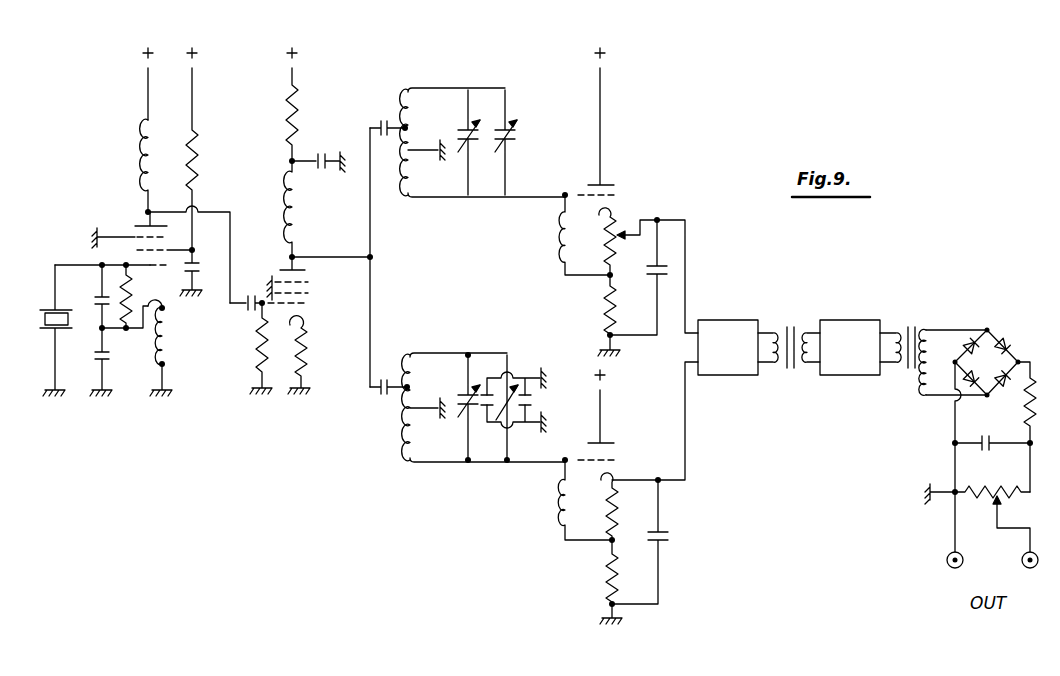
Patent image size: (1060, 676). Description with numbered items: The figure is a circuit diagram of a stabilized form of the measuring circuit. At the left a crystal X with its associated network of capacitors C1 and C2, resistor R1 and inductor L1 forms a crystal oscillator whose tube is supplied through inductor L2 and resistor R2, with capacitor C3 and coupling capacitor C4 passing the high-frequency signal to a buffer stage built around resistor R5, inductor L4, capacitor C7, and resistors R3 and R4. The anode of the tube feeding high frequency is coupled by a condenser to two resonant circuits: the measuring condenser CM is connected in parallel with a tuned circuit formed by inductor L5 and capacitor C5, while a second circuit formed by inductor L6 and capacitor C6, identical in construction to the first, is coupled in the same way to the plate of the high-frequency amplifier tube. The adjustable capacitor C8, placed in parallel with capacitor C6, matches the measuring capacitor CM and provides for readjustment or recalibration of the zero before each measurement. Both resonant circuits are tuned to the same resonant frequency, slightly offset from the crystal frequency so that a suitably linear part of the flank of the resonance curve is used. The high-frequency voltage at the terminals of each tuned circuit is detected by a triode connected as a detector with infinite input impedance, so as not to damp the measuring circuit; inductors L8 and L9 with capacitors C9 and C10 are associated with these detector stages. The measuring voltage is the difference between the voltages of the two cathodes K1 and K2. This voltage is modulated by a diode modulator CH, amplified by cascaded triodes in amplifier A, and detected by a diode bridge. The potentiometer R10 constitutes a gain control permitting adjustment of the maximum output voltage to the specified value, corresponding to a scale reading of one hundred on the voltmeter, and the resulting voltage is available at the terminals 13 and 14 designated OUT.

The inductor L1 is at (172, 348).
The inductor L2 is at (129, 131).
The inductor L4 is at (275, 210).
The tuned circuit inductor L5 is at (483, 407).
The second tuned circuit inductor L6 is at (482, 142).
The inductor L8 is at (569, 235).
The inductor L9 is at (571, 500).
The capacitor C1 is at (89, 296).
The capacitor C2 is at (91, 362).
The capacitor C3 is at (203, 273).
The coupling capacitor C4 is at (247, 293).
The tuned circuit capacitor C5 is at (459, 407).
The second tuned circuit capacitor C6 is at (475, 142).
The capacitor C7 is at (318, 173).
The adjustable capacitor C8 is at (513, 142).
The capacitor C9 is at (638, 277).
The capacitor C10 is at (659, 542).
The measuring condenser CM is at (513, 409).
The resistor R1 is at (127, 307).
The resistor R2 is at (207, 150).
The resistor R3 is at (249, 348).
The resistor R4 is at (310, 355).
The resistor R5 is at (276, 106).
The potentiometer R10 is at (983, 518).
The cathode K1 is at (657, 264).
The cathode K2 is at (655, 422).
The crystal X is at (53, 330).
The chopper / converter unit CH is at (759, 347).
The amplifier A is at (867, 347).
The output terminal 13 is at (951, 575).
The output terminal 14 is at (1034, 572).